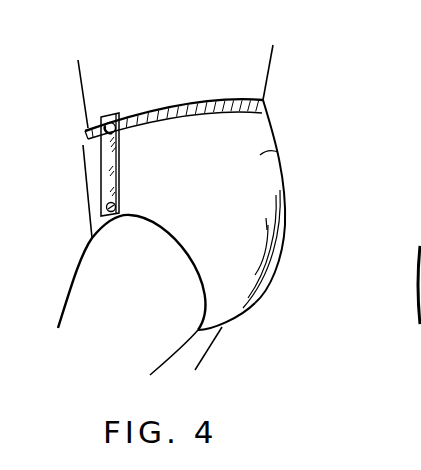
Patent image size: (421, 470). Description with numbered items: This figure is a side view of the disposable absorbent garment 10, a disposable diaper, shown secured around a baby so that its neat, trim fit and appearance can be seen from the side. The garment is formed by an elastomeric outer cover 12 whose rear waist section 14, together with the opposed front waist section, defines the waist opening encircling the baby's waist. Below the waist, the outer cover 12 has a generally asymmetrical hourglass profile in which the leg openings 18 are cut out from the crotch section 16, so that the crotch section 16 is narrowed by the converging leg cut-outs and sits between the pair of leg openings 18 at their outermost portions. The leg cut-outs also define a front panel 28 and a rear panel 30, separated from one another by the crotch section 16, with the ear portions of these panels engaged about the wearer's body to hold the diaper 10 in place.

The disposable absorbent garment 10 is at (304, 123).
The elastomeric outer cover 12 is at (278, 152).
The rear waist section 14 is at (188, 97).
The crotch section 16 is at (235, 323).
The leg openings 18 is at (183, 247).
The front panel 28 is at (82, 193).
The rear panel 30 is at (287, 217).